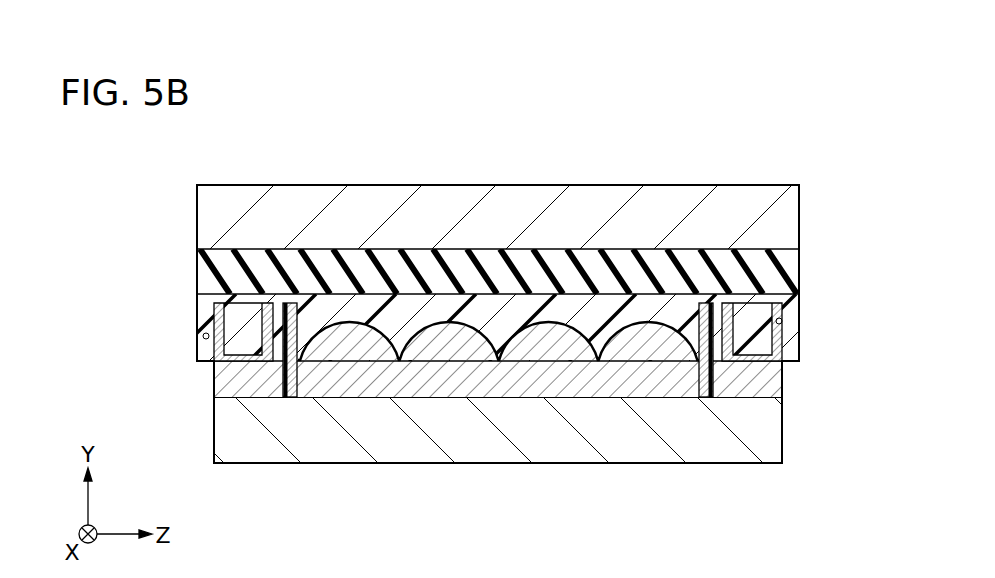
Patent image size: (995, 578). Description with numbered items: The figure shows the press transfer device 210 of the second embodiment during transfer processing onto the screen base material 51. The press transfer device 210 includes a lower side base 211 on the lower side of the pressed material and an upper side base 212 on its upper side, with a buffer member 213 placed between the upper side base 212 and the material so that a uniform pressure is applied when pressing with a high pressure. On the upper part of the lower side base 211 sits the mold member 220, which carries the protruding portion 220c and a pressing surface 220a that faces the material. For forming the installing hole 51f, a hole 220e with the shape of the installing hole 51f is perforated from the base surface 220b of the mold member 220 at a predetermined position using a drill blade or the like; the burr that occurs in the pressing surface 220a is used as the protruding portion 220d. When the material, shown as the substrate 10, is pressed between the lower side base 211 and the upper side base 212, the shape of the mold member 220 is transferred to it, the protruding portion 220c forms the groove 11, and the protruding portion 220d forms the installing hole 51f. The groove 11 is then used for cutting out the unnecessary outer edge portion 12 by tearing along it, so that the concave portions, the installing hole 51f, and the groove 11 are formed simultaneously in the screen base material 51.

The substrate 10 is at (417, 305).
The groove 11 is at (206, 338).
The outer edge portion 12 is at (199, 304).
The screen base material 51 is at (245, 318).
The installing hole 51f is at (320, 325).
The press transfer device 210 is at (836, 185).
The lower side base 211 is at (552, 432).
The upper side base 212 is at (518, 205).
The buffer member 213 is at (593, 262).
The mold member 220 is at (487, 327).
The pressing surface 220a is at (255, 365).
The base surface 220b is at (438, 385).
The protruding portion 220c is at (205, 356).
The protruding portion 220d is at (287, 345).
The hole 220e is at (296, 380).